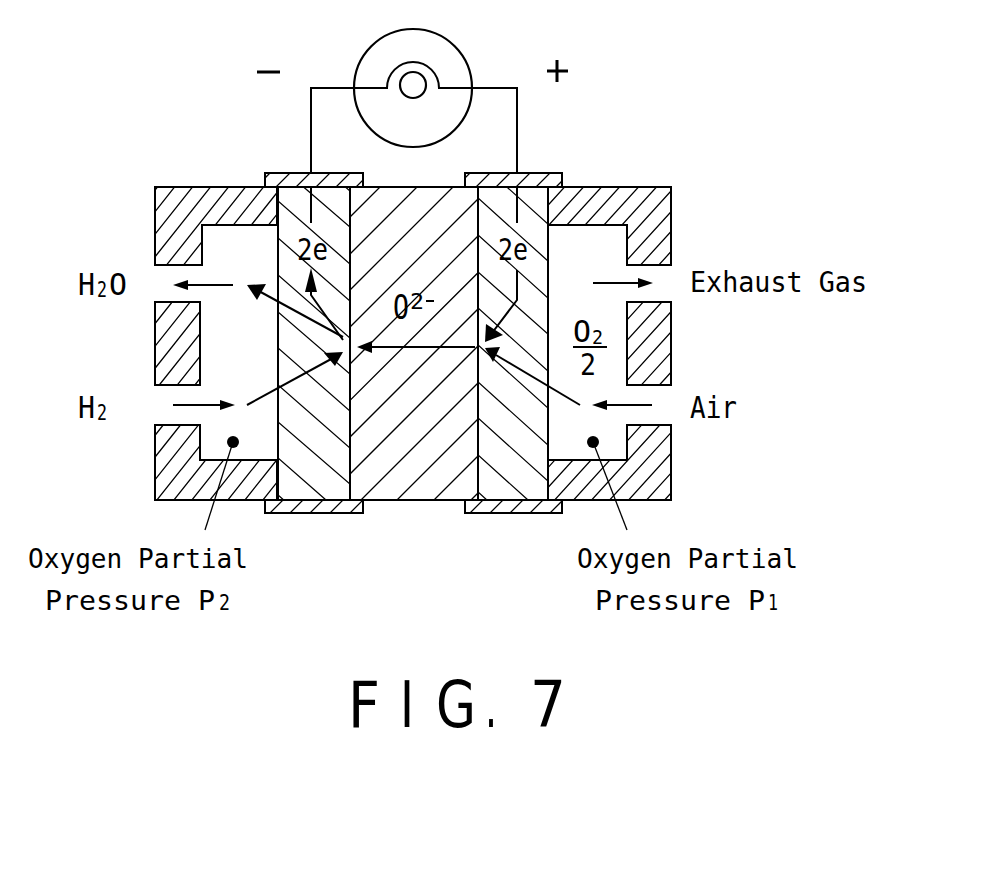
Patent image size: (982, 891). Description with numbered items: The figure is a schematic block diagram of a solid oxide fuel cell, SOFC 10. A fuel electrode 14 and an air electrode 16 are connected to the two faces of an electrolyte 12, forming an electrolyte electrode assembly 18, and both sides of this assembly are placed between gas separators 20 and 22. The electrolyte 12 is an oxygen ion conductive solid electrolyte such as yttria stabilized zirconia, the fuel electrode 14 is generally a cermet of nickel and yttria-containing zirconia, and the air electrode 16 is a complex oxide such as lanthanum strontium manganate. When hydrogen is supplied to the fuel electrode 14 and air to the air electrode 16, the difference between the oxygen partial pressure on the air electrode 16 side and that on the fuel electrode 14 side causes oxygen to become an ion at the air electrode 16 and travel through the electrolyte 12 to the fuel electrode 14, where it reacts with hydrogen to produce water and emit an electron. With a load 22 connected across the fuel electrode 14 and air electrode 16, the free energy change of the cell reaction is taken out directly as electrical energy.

The SOFC 10 is at (775, 113).
The electrolyte 12 is at (413, 462).
The fuel electrode 14 is at (320, 462).
The air electrode 16 is at (510, 462).
The electrolyte electrode assembly 18 is at (537, 568).
The gas separator 20 is at (157, 475).
The gas separator 22 is at (660, 478).